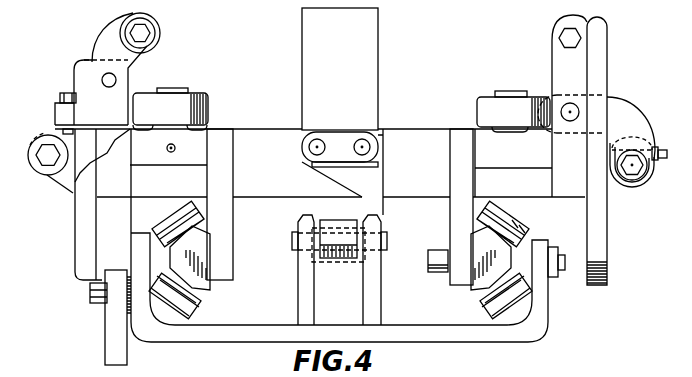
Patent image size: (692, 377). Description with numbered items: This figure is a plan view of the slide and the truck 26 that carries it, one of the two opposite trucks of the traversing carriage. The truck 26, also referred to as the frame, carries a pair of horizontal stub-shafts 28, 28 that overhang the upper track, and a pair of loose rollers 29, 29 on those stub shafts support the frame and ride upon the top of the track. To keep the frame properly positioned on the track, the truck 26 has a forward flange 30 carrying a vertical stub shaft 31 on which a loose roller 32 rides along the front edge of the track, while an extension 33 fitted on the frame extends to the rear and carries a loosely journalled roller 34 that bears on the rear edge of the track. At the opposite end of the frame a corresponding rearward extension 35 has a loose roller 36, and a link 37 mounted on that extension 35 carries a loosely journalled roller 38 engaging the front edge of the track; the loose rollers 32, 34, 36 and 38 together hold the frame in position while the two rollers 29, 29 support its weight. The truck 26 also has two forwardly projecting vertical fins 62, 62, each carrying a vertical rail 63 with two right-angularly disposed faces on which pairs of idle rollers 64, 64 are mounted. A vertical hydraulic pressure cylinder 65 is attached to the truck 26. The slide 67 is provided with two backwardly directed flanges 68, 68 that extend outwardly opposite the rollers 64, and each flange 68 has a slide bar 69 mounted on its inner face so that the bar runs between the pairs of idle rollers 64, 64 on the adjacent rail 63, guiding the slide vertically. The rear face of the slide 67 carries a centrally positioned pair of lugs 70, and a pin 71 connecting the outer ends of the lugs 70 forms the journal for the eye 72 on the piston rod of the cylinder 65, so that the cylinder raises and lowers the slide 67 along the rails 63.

The truck 26 is at (281, 141).
The horizontal stub-shaft 28 is at (180, 92).
The loose roller 29 is at (208, 108).
The forward flange 30 is at (37, 136).
The vertical stub shaft 31 is at (47, 156).
The loose roller 32 is at (40, 178).
The extension 33 is at (107, 40).
The loose roller 34 is at (160, 37).
The rearward extension 35 is at (565, 63).
The loose roller 36 is at (552, 45).
The link 37 is at (642, 131).
The loosely journalled roller 38 is at (645, 181).
The vertical fin 62 is at (233, 222).
The vertical rail 63 is at (200, 288).
The idle roller 64 is at (503, 230).
The vertical hydraulic pressure cylinder 65 is at (319, 208).
The slide 67 is at (437, 331).
The backwardly directed flange 68 is at (148, 316).
The slide bar 69 is at (156, 236).
The lug 70 is at (363, 305).
The pin 71 is at (387, 240).
The eye 72 is at (340, 258).